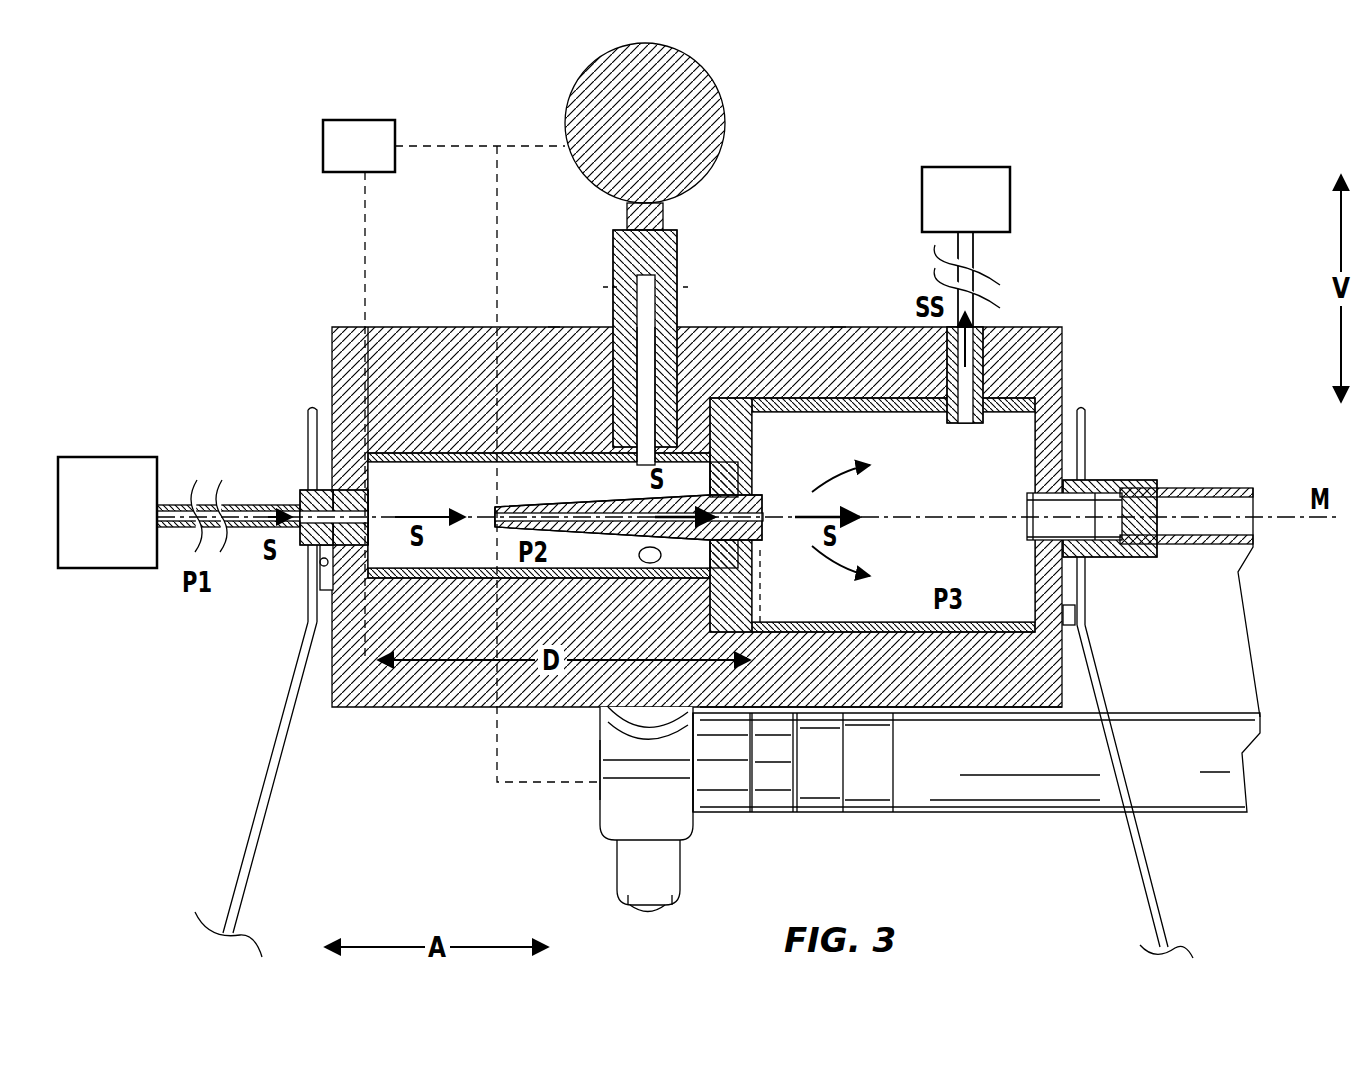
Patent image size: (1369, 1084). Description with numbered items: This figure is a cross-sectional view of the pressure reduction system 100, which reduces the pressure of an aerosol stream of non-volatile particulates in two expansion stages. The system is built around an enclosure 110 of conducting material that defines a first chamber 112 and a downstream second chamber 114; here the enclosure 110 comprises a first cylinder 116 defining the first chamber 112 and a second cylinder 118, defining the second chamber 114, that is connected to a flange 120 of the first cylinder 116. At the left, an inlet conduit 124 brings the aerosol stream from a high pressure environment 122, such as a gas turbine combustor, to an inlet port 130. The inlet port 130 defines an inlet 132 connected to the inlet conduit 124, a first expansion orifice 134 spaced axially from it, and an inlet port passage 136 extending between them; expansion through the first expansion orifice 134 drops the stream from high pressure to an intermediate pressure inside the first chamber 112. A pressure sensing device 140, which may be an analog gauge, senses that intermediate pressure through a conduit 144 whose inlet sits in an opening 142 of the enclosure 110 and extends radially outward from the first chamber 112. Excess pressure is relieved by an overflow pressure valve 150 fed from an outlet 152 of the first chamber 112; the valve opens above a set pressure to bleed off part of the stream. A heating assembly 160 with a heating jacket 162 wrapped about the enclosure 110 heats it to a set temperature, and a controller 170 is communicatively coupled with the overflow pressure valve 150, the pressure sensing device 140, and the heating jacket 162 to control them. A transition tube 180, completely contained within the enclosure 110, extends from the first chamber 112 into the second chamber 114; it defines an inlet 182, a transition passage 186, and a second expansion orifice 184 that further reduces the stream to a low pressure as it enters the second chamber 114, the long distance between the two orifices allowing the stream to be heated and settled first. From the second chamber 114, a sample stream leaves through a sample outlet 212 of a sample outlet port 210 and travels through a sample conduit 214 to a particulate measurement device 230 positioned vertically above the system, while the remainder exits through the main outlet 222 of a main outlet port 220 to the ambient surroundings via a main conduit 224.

The pressure reduction system 100 is at (982, 146).
The enclosure 110 is at (795, 396).
The first chamber 112 is at (427, 490).
The second chamber 114 is at (913, 458).
The first cylinder 116 is at (458, 452).
The second cylinder 118 is at (988, 637).
The flange 120 is at (705, 450).
The high pressure environment 122 is at (107, 512).
The inlet conduit 124 is at (243, 503).
The inlet port 130 is at (306, 492).
The inlet 132 is at (296, 503).
The first expansion orifice 134 is at (357, 325).
The inlet port passage 136 is at (340, 492).
The pressure sensing device 140 is at (720, 97).
The opening 142 is at (642, 455).
The conduit 144 is at (688, 300).
The overflow pressure valve 150 is at (600, 825).
The outlet 152 is at (668, 557).
The heating assembly 160 is at (838, 325).
The heating jacket 162 is at (550, 327).
The controller 170 is at (460, 451).
The transition tube 180 is at (630, 497).
The inlet 182 is at (492, 509).
The second expansion orifice 184 is at (765, 507).
The transition passage 186 is at (630, 522).
The sample outlet port 210 is at (985, 385).
The sample outlet 212 is at (966, 428).
The sample conduit 214 is at (998, 300).
The main outlet port 220 is at (1080, 483).
The main outlet 222 is at (1022, 528).
The main conduit 224 is at (1186, 487).
The particulate measurement device 230 is at (966, 199).